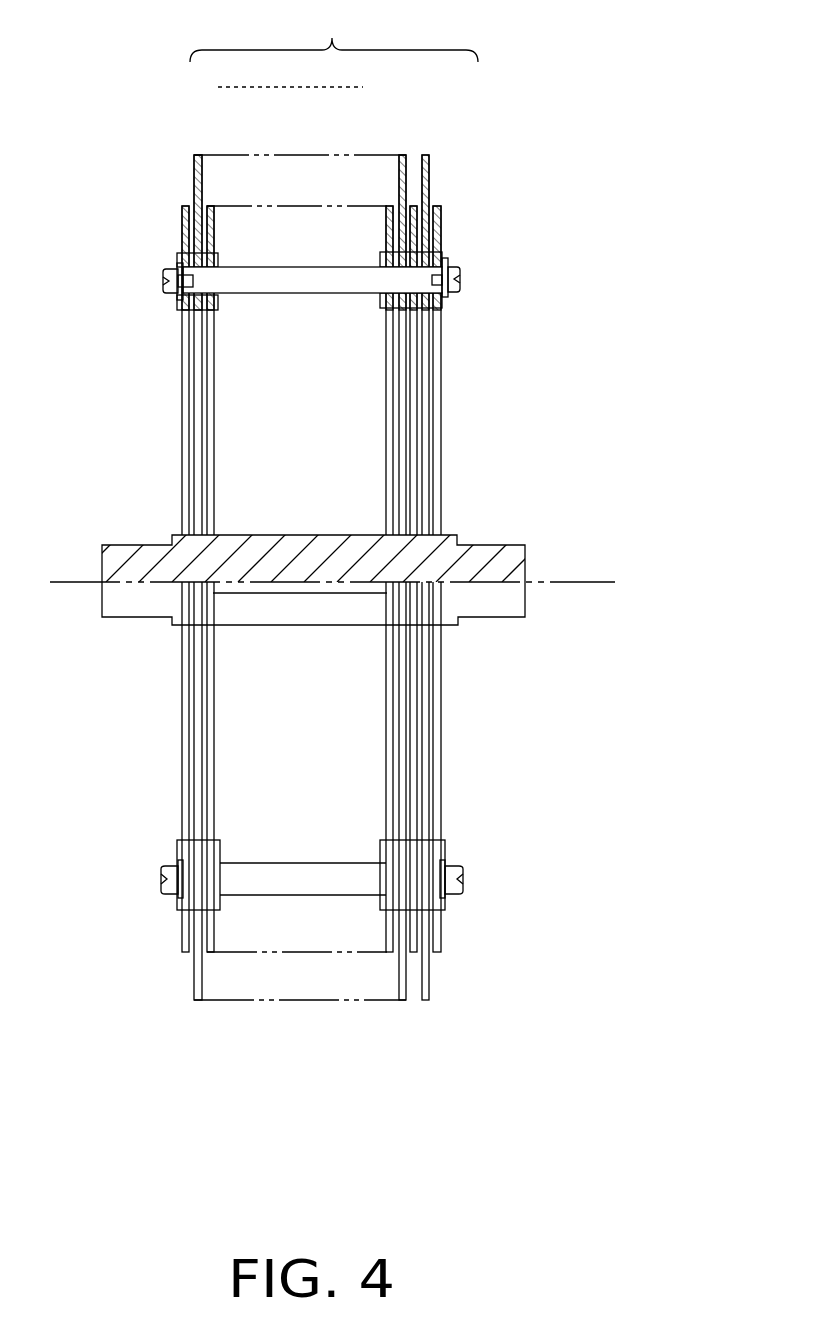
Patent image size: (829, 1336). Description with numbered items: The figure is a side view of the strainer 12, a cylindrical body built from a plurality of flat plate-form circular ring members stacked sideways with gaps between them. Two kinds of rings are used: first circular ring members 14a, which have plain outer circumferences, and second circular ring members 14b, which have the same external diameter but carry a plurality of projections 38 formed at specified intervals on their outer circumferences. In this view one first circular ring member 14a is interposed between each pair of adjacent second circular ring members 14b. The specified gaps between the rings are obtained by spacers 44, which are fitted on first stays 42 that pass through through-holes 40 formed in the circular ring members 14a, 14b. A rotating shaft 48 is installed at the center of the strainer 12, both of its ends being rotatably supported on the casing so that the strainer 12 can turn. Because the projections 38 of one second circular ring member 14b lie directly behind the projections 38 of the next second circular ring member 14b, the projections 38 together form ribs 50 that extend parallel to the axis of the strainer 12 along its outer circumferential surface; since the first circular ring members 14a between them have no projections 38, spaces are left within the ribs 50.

The strainer 12 is at (370, 565).
The first circular ring member 14a is at (442, 207).
The second circular ring member 14b is at (432, 167).
The projection 38 is at (402, 156).
The through-hole 40 is at (390, 292).
The first stay 42 is at (260, 277).
The spacer 44 is at (438, 244).
The rotating shaft 48 is at (124, 553).
The rib 50 is at (334, 45).